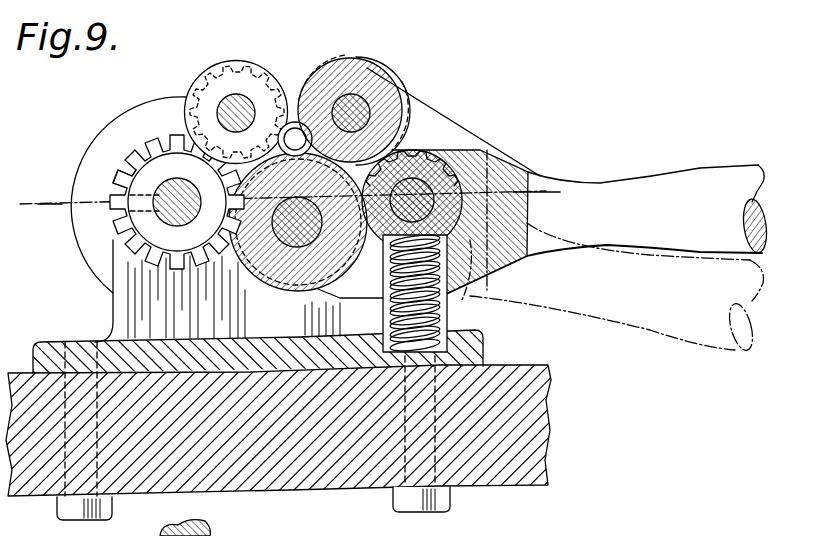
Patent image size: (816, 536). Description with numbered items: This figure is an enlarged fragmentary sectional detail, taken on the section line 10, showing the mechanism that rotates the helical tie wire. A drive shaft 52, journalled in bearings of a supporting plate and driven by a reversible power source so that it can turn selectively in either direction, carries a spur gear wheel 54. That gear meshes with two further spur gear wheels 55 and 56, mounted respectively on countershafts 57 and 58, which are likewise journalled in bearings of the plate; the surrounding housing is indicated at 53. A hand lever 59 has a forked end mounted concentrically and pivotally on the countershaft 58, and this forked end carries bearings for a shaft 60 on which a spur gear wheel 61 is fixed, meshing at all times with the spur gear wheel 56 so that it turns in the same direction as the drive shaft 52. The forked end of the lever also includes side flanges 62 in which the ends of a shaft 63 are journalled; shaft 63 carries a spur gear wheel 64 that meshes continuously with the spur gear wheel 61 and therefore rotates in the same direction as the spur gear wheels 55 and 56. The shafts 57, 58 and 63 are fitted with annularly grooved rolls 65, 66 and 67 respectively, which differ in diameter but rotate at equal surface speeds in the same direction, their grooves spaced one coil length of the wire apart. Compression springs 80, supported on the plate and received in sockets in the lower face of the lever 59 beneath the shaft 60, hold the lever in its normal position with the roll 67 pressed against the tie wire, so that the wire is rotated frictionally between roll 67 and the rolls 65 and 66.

The section line 10 is at (53, 194).
The drive shaft 52 is at (163, 220).
The housing 53 is at (157, 85).
The spur gear wheel 54 is at (122, 178).
The spur gear wheel 55 is at (252, 65).
The spur gear wheel 56 is at (281, 291).
The countershaft 57 is at (233, 103).
The countershaft 58 is at (264, 274).
The hand lever 59 is at (657, 252).
The shaft 60 is at (448, 151).
The spur gear wheel 61 is at (420, 150).
The side flanges 62 is at (408, 152).
The shaft 63 is at (359, 73).
The spur gear wheel 64 is at (328, 73).
The annularly grooved roll 65 is at (255, 65).
The annularly grooved roll 66 is at (348, 262).
The annularly grooved roll 67 is at (377, 80).
The compression springs 80 is at (445, 318).